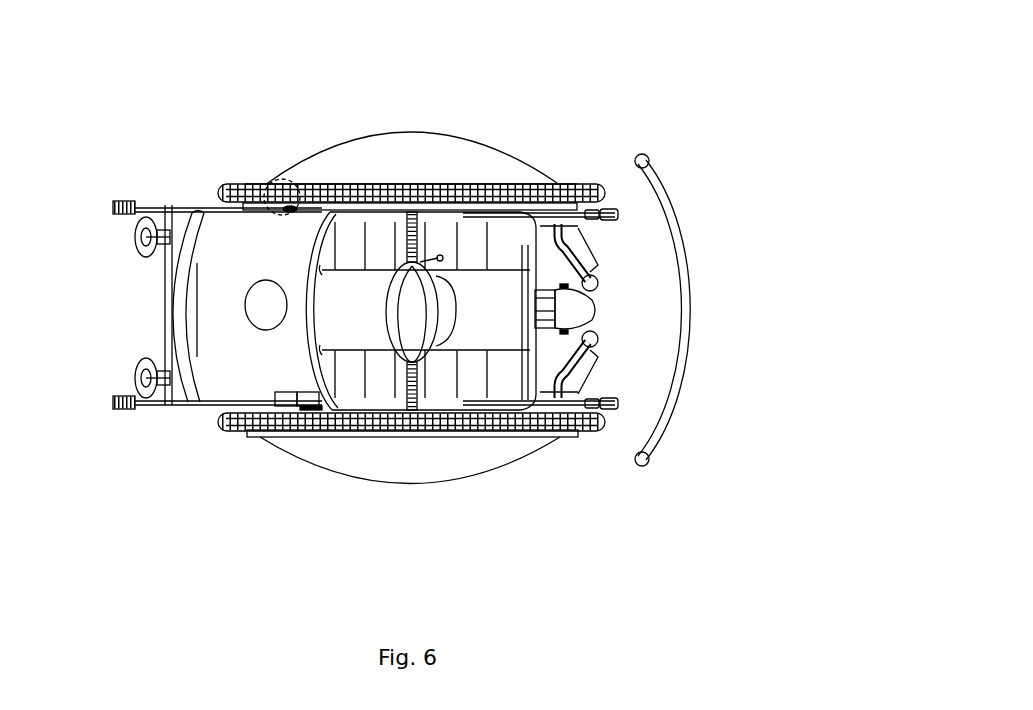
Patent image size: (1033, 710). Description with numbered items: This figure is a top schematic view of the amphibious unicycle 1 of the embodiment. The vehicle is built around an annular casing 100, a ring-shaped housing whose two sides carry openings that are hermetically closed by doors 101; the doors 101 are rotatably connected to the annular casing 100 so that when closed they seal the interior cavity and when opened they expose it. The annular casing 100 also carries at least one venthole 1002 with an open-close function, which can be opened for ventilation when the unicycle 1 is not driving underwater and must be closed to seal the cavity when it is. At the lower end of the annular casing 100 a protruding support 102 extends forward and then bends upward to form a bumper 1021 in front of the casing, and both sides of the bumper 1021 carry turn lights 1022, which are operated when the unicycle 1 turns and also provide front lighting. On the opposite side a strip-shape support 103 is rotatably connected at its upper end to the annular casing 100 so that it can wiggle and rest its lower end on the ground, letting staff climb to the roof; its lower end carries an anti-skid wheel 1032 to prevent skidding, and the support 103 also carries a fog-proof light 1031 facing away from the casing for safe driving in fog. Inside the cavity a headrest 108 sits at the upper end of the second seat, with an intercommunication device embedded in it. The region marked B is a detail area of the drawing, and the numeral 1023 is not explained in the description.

The amphibious unicycle 1 is at (444, 100).
The annular casing 100 is at (227, 383).
The doors 101 is at (378, 152).
The venthole 1002 is at (267, 307).
The protruding support 102 is at (670, 180).
The bumper 1021 is at (683, 270).
The turn lights 1022 is at (640, 152).
The head rest 1023 is at (578, 308).
The strip-shape support 103 is at (155, 275).
The fog-proof light 1031 is at (135, 238).
The anti-skid wheel 1032 is at (113, 213).
The headrest 108 is at (425, 215).
The detail region B is at (262, 172).